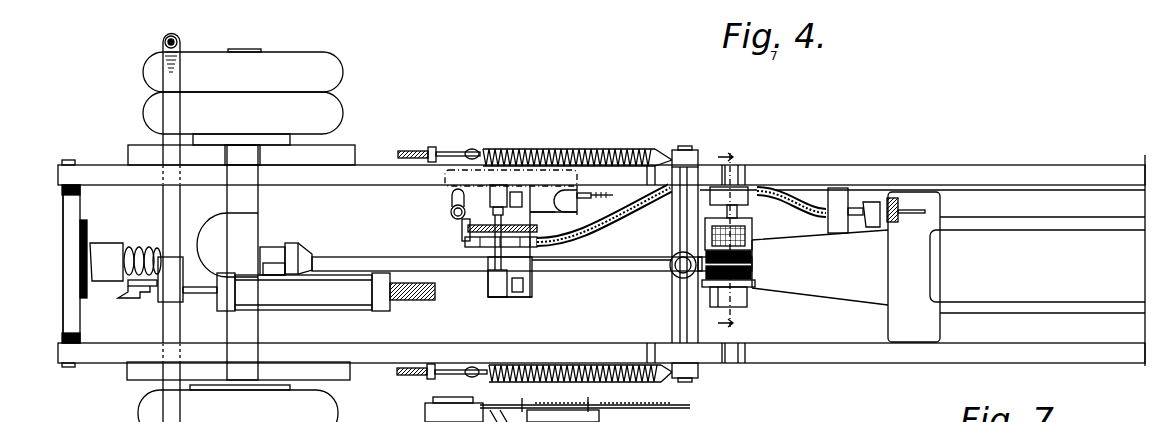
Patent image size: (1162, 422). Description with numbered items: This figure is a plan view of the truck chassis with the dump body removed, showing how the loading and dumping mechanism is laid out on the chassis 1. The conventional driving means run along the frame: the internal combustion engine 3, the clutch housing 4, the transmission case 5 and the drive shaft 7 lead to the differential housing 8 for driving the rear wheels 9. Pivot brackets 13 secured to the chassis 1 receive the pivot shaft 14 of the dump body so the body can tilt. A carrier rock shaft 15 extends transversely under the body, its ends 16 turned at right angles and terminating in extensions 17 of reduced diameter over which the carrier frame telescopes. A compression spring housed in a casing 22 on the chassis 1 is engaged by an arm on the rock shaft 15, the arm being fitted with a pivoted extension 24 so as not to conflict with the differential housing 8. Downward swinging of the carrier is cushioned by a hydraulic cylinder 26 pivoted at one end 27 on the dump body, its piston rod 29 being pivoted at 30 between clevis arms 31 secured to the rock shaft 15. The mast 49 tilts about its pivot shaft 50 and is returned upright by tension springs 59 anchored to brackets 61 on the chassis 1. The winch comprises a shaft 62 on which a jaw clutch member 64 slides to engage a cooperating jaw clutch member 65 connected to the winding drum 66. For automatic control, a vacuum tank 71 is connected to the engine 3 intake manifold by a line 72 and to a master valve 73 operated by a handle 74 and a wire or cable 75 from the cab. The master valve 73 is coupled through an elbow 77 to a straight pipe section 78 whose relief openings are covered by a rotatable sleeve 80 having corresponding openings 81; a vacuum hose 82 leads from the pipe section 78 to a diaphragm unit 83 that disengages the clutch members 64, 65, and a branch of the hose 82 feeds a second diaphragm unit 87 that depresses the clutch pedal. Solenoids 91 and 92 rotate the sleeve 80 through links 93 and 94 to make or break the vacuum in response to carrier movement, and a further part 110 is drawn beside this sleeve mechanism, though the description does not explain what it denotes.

The chassis 1 is at (851, 360).
The internal combustion engine 3 is at (1113, 292).
The clutch housing 4 is at (905, 312).
The transmission case 5 is at (835, 282).
The drive shaft 7 is at (626, 280).
The differential housing 8 is at (270, 244).
The rear wheels 9 is at (333, 80).
The pivot brackets 13 is at (96, 188).
The pivot shaft 14 is at (68, 205).
The carrier rock shaft 15 is at (167, 380).
The ends of the shaft 16 is at (174, 38).
The extensions of reduced diameter 17 is at (178, 44).
The casing 22 is at (100, 250).
The extension 24 is at (136, 254).
The hydraulic cylinder 26 is at (340, 298).
The pivoted end of the cylinder 27 is at (413, 302).
The piston rod 29 is at (203, 294).
The pivot 30 is at (145, 300).
The clevis arms 31 is at (138, 287).
The mast 49 is at (678, 274).
The pivot shaft of the mast 50 is at (686, 148).
The tension springs 59 is at (620, 150).
The brackets 61 is at (435, 147).
The shaft 62 is at (745, 203).
The jaw clutch member 64 is at (753, 224).
The cooperating jaw clutch member 65 is at (753, 250).
The winding drum 66 is at (754, 272).
The vacuum tank 71 is at (548, 212).
The line 72 is at (582, 198).
The master valve 73 is at (451, 212).
The handle 74 is at (468, 229).
The wire or cable 75 is at (556, 150).
The elbow 77 is at (468, 248).
The straight section of pipe 78 is at (593, 240).
The rotatable sleeve 80 is at (537, 262).
The openings 81 is at (510, 275).
The vacuum hose 82 is at (632, 216).
The diaphragm unit 83 is at (758, 190).
The second diaphragm unit 87 is at (838, 196).
The solenoid 91 is at (512, 298).
The solenoid 92 is at (500, 185).
The link 93 is at (490, 282).
The link 94 is at (517, 192).
The lug 110 is at (524, 285).